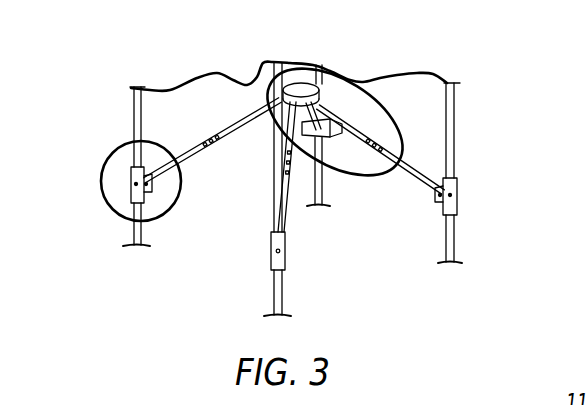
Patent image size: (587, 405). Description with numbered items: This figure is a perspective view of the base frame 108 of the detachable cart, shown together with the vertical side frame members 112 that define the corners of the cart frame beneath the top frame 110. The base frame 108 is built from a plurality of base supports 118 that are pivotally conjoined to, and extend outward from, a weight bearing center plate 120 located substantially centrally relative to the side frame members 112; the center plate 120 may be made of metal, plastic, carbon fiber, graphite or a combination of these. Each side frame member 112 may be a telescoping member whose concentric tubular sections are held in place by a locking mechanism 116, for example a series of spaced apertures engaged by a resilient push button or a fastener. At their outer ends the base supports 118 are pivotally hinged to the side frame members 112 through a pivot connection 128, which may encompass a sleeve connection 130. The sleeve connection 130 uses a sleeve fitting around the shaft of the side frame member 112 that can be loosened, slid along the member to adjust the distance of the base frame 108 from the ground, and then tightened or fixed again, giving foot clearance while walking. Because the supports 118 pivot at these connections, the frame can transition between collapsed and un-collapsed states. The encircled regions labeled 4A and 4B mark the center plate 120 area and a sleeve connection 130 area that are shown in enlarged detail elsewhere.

The base frame 108 is at (201, 118).
The top frame 110 is at (180, 152).
The side frame member 112 is at (133, 107).
The locking mechanism 116 is at (222, 149).
The base support 118 is at (411, 181).
The center plate 120 is at (300, 88).
The pivot connection 128 is at (267, 259).
The sleeve connection 130 is at (458, 205).
The detail region of FIG. 4A is at (357, 94).
The detail region of FIG. 4B is at (112, 210).